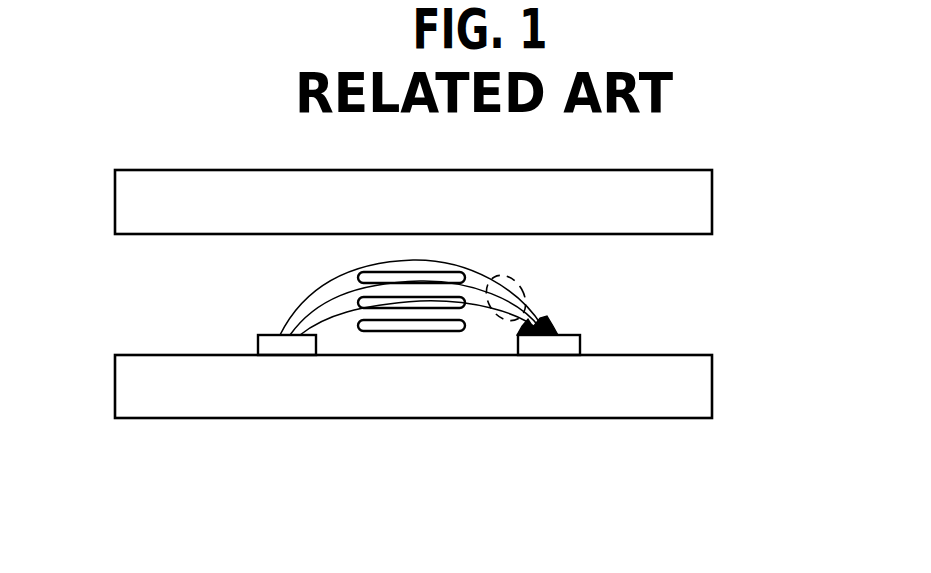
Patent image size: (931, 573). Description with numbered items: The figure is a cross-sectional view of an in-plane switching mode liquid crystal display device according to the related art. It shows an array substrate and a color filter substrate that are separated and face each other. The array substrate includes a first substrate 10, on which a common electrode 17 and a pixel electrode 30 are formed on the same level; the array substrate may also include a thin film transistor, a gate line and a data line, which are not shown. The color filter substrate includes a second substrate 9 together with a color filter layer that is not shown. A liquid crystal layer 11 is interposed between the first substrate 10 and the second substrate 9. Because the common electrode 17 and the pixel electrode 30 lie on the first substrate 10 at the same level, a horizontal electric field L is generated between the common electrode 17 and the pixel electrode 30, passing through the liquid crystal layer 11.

The second substrate 9 is at (738, 170).
The first substrate 10 is at (738, 357).
The liquid crystal layer 11 is at (738, 236).
The common electrode 17 is at (558, 345).
The pixel electrode 30 is at (285, 347).
The horizontal electric field L is at (492, 323).